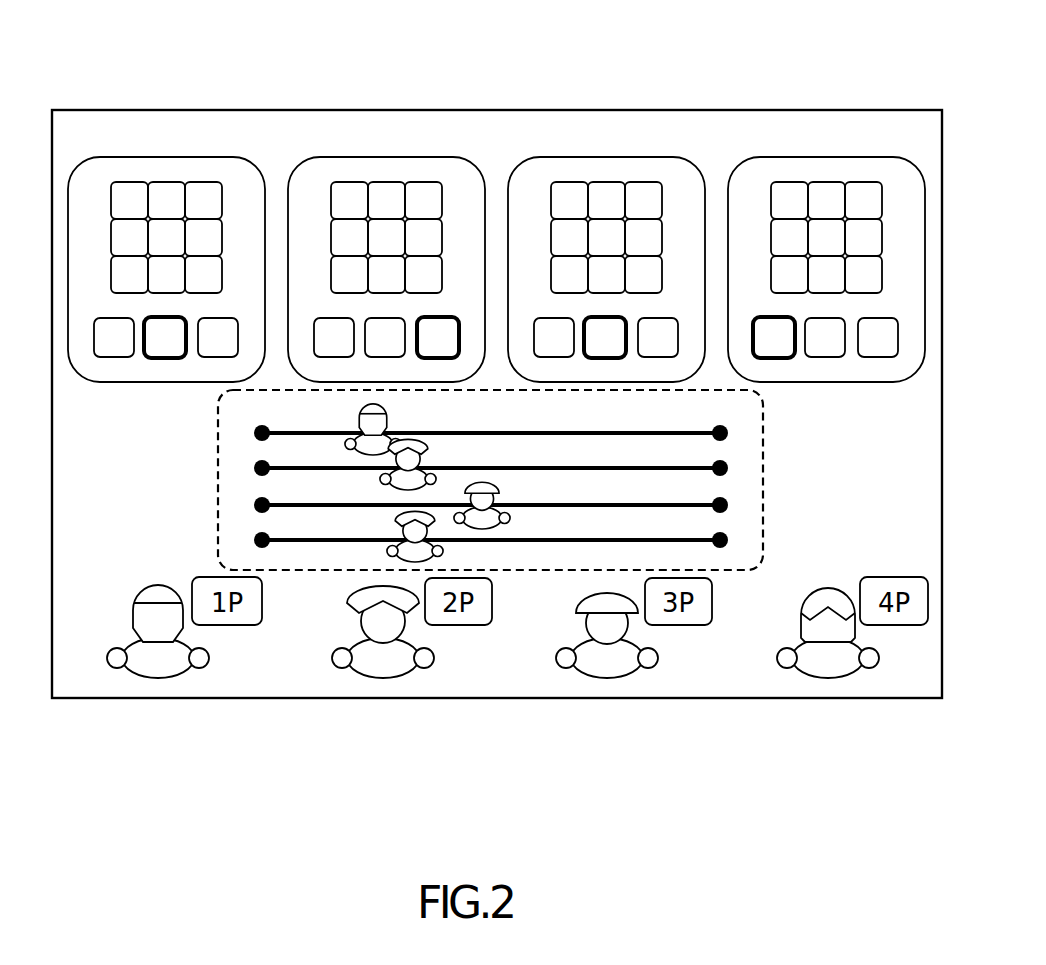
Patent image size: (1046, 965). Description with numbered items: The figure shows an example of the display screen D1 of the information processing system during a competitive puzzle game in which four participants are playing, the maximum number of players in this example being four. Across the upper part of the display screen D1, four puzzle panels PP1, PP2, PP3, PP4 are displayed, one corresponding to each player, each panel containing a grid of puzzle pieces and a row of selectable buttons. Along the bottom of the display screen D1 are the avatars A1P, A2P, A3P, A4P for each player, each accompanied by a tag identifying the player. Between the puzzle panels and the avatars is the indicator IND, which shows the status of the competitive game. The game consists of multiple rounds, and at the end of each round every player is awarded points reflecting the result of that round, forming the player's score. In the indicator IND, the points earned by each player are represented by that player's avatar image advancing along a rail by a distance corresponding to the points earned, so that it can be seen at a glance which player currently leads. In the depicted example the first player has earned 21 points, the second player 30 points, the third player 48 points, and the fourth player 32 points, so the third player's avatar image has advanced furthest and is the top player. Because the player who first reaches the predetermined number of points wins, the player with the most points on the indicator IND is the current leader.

The display screen D1 is at (288, 100).
The puzzle panel PP1 is at (185, 157).
The puzzle panel PP2 is at (399, 157).
The puzzle panel PP3 is at (618, 157).
The puzzle panel PP4 is at (795, 157).
The indicator IND is at (490, 590).
The points of player 1P 21 is at (382, 428).
The points of player 2P 30 is at (420, 464).
The points of player 3P 48 is at (492, 505).
The points of player 4P 32 is at (424, 536).
The avatar A1P is at (165, 680).
The avatar A2P is at (388, 680).
The avatar A3P is at (612, 680).
The avatar A4P is at (833, 680).